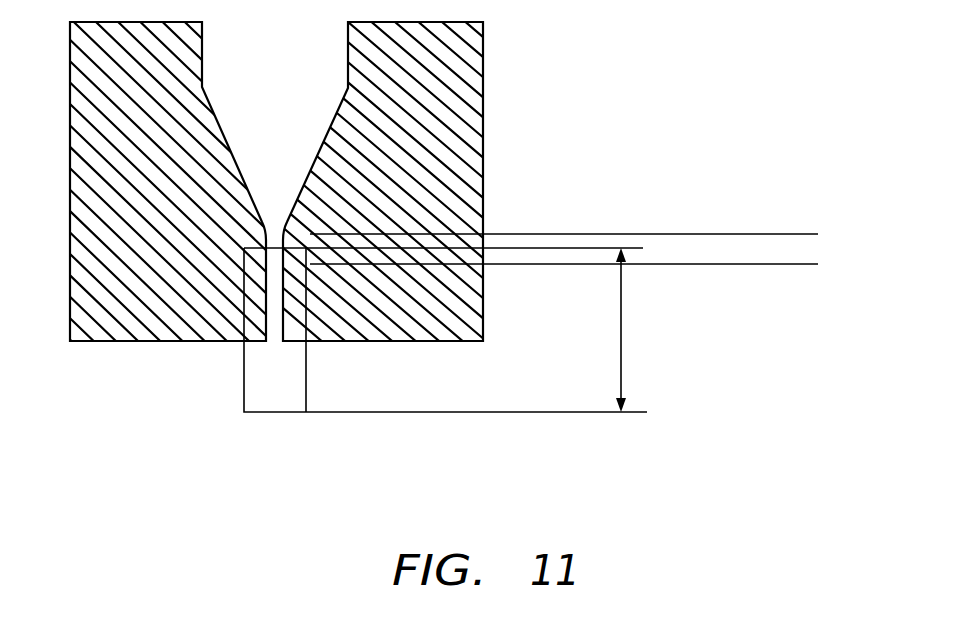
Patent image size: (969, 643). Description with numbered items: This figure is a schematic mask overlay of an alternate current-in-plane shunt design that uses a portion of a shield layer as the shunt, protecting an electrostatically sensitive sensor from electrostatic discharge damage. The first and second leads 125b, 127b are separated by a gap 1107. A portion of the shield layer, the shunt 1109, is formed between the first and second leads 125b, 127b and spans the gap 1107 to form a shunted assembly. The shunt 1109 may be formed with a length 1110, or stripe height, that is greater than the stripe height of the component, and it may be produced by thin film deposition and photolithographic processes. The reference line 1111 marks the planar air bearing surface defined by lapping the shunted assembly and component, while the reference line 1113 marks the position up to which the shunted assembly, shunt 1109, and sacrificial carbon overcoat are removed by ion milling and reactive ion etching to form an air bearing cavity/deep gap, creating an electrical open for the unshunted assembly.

The second lead 127b is at (115, 318).
The first lead 125b is at (470, 319).
The gap 1107 is at (218, 302).
The shunt 1109 is at (238, 401).
The length 1110 is at (621, 283).
The reference line 1111 is at (796, 276).
The reference line 1113 is at (796, 222).